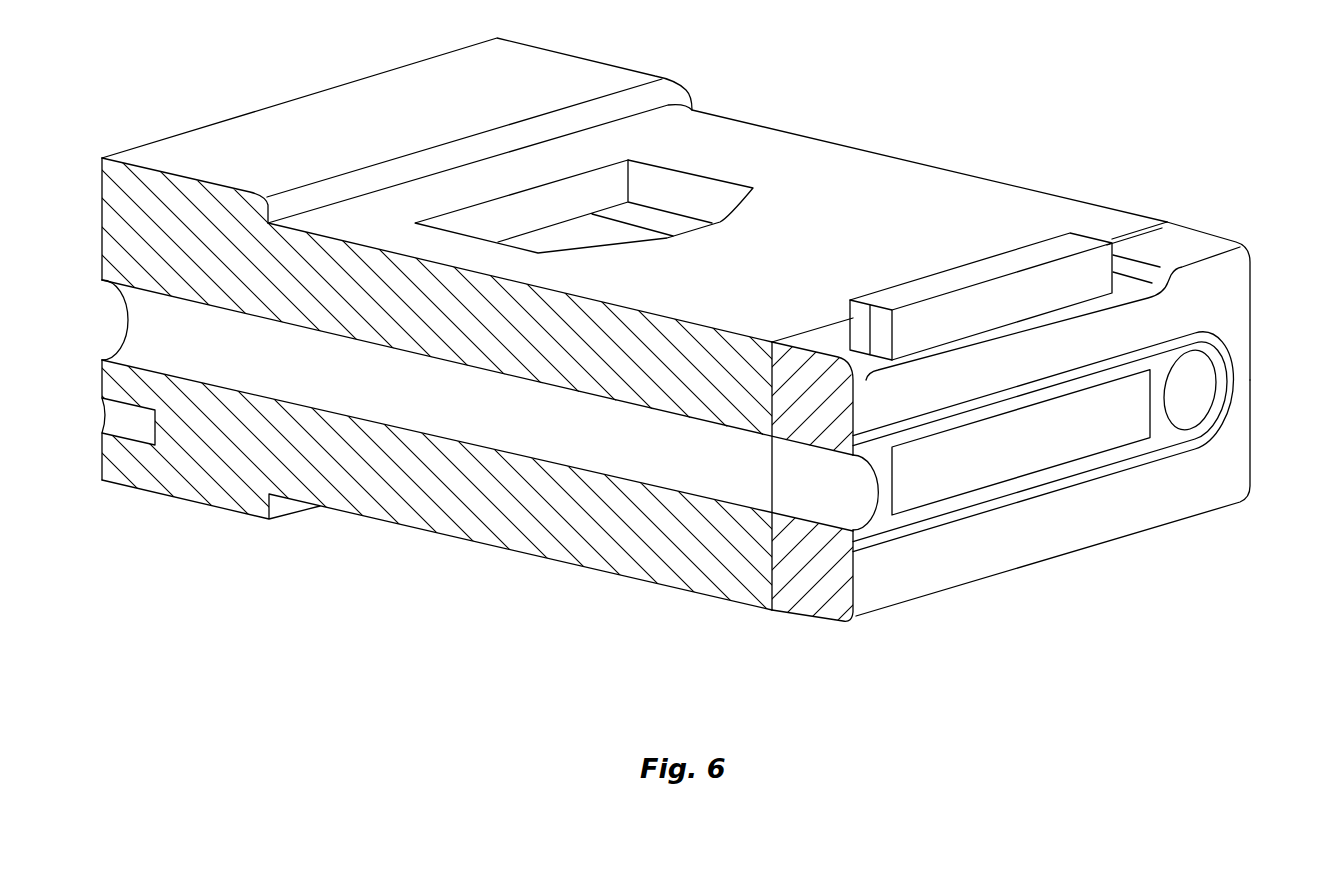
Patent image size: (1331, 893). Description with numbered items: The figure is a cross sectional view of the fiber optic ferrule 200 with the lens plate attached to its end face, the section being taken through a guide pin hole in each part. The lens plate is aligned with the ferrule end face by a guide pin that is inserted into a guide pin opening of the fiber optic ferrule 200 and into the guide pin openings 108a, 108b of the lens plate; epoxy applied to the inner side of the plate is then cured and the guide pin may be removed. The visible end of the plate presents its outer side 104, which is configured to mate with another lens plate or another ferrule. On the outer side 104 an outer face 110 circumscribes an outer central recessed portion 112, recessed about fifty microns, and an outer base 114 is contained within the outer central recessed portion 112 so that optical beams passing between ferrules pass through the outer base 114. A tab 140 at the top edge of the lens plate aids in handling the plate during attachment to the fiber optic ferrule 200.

The fiber optic ferrule 200 is at (583, 446).
The tab 140 is at (910, 297).
The outer face 110 is at (1237, 289).
The guide pin opening 108a is at (1207, 395).
The guide pin opening 108b is at (865, 507).
The outer side 104 is at (1240, 477).
The outer central recessed portion 112 is at (1115, 457).
The outer base 114 is at (1037, 453).